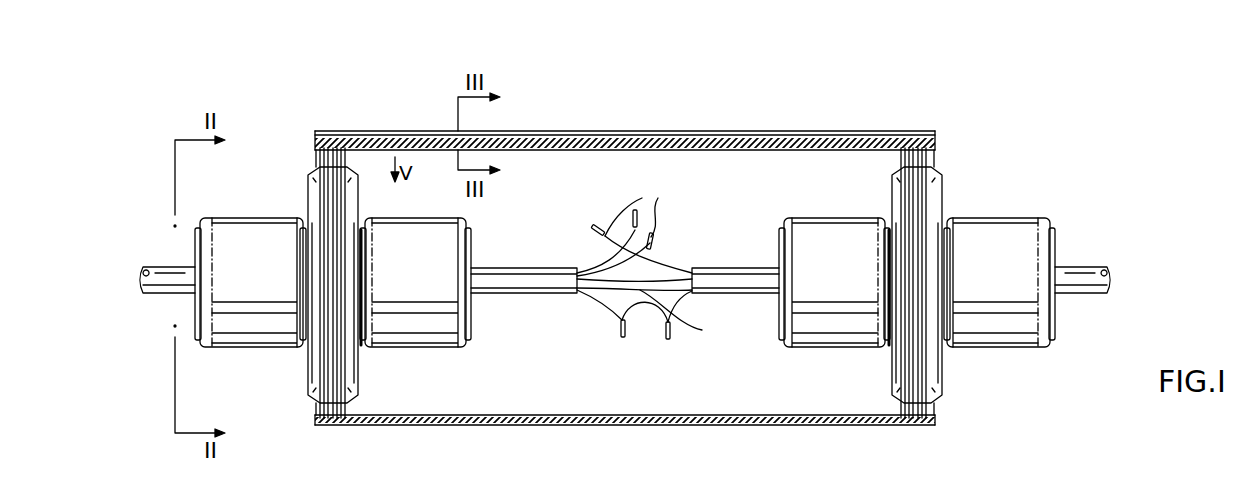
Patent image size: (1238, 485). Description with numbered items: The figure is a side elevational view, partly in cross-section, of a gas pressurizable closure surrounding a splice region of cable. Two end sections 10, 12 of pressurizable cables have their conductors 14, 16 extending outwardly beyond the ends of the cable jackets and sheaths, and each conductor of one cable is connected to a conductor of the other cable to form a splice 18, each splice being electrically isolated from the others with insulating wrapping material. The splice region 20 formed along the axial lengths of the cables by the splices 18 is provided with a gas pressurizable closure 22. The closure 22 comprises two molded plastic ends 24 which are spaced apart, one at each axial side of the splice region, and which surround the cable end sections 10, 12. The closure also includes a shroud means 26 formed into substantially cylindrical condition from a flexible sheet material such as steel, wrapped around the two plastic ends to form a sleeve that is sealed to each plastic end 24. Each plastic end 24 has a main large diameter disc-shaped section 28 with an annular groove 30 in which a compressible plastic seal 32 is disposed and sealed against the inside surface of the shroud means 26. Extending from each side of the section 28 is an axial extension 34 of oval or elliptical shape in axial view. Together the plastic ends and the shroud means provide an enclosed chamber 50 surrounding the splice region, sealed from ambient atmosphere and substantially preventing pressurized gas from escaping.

The cable end section 10 is at (521, 272).
The cable end section 12 is at (740, 272).
The conductors 14 is at (602, 270).
The conductors 16 is at (686, 298).
The splice 18 is at (652, 234).
The splice region 20 is at (639, 293).
The gas pressurizable closure 22 is at (708, 132).
The molded plastic end 24 is at (266, 216).
The shroud means 26 is at (528, 426).
The disc-shaped section 28 is at (313, 380).
The annular groove 30 is at (345, 402).
The compressible plastic seal 32 is at (337, 378).
The axial extension 34 is at (272, 340).
The enclosed chamber 50 is at (625, 264).